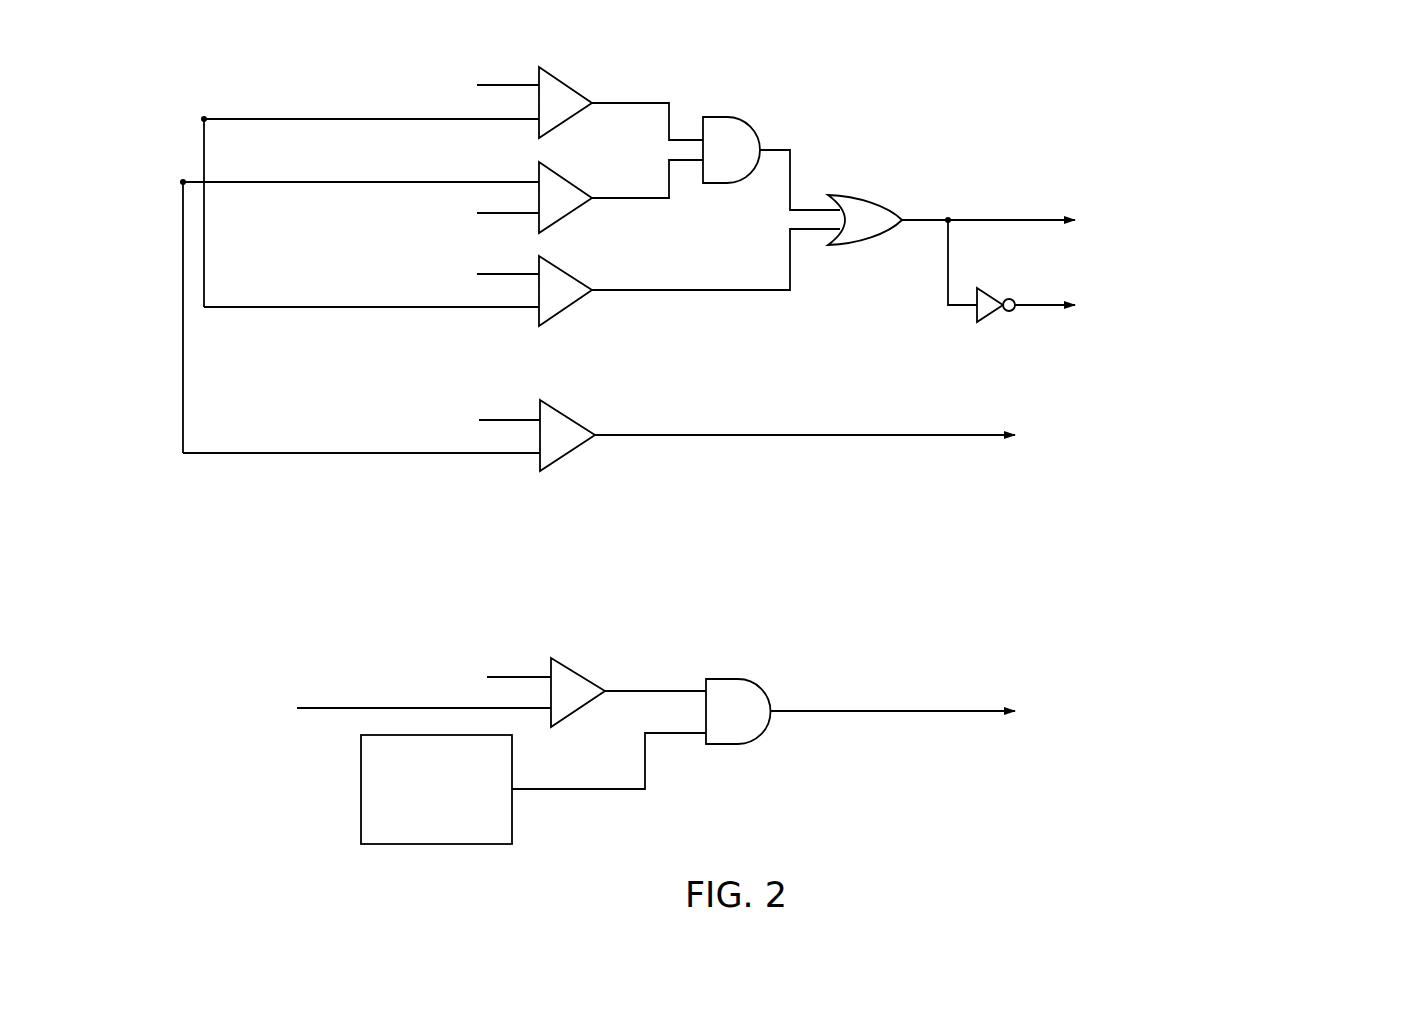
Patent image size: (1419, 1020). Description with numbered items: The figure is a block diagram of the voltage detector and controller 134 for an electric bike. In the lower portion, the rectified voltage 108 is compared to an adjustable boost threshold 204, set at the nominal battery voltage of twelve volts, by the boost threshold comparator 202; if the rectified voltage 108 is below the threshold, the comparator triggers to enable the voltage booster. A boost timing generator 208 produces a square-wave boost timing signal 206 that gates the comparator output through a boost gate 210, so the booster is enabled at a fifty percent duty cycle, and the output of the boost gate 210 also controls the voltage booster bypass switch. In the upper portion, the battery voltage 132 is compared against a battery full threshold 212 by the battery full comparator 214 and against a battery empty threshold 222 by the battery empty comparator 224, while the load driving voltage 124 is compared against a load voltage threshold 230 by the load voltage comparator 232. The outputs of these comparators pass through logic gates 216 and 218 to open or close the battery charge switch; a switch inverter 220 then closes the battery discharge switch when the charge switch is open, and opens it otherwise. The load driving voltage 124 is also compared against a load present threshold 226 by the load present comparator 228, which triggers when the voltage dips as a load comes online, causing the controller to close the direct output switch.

The rectified voltage 108 is at (297, 708).
The load driving voltage 124 is at (183, 182).
The battery voltage 132 is at (204, 119).
The voltage detector and controller 134 is at (986, 101).
The boost threshold comparator 202 is at (582, 672).
The boost threshold 204 is at (515, 677).
The boost timing signal 206 is at (584, 789).
The boost timing generator 208 is at (361, 792).
The boost gate 210 is at (727, 679).
The battery full threshold 212 is at (501, 85).
The battery full comparator 214 is at (572, 83).
The logic gate 216 is at (722, 117).
The logic gate 218 is at (862, 197).
The switch inverter 220 is at (986, 289).
The battery empty threshold 222 is at (507, 274).
The battery empty comparator 224 is at (580, 272).
The load present threshold 226 is at (504, 420).
The load present comparator 228 is at (577, 418).
The load voltage threshold 230 is at (507, 213).
The load voltage comparator 232 is at (577, 175).